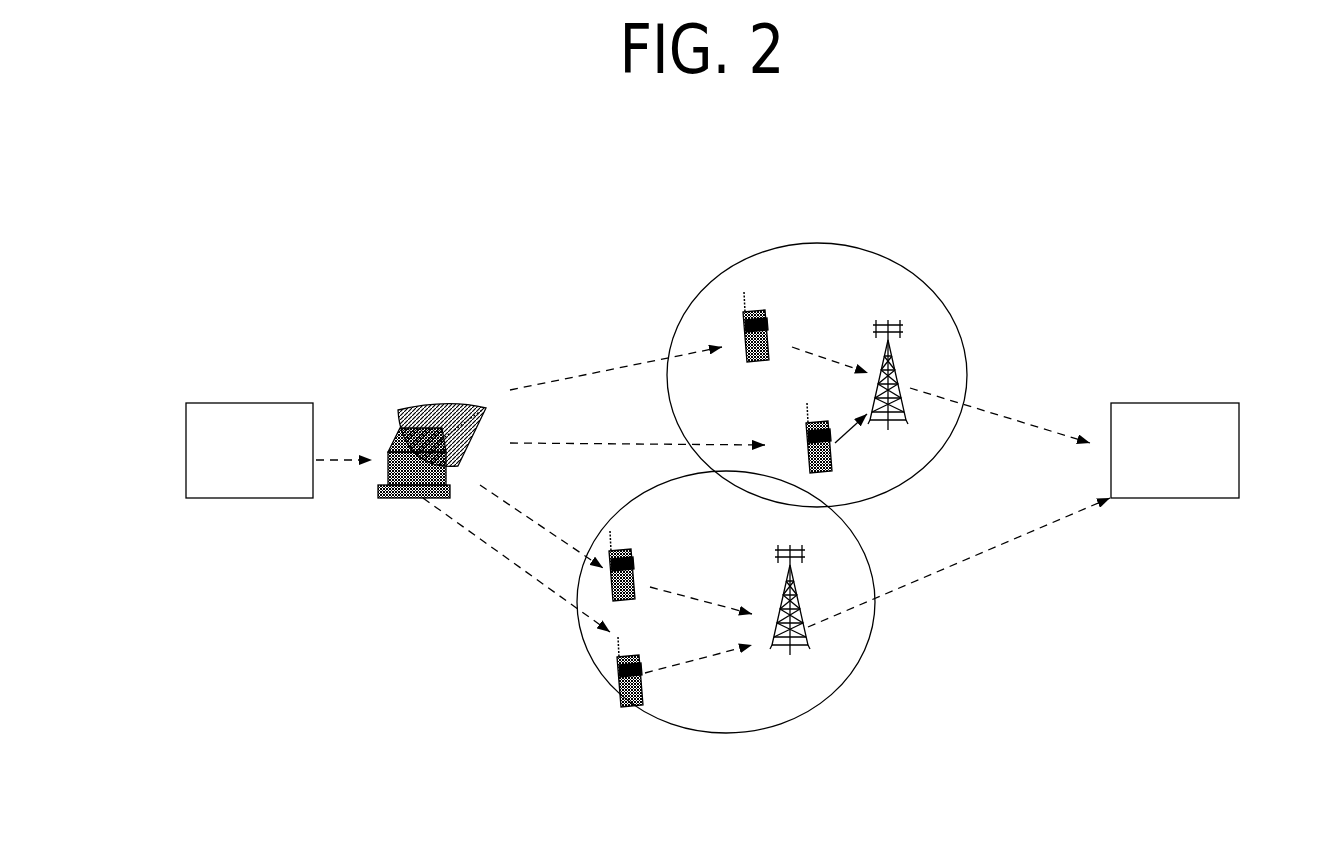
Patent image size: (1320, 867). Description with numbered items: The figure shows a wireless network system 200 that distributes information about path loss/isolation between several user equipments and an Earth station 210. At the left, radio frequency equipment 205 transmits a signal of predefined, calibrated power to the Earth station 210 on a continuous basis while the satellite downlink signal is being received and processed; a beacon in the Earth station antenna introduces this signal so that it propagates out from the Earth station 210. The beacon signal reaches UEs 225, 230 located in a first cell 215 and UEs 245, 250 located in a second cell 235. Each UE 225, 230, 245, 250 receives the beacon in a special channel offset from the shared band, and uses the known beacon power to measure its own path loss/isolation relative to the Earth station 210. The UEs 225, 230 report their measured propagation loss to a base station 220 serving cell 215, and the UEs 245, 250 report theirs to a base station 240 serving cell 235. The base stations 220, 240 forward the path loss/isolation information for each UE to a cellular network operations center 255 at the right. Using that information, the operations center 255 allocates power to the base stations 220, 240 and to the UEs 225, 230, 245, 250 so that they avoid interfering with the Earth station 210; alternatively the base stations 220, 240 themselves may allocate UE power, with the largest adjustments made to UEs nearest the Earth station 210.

The wireless network system 200 is at (320, 198).
The radio frequency equipment 205 is at (278, 397).
The Earth station 210 is at (397, 507).
The cell 215 is at (865, 652).
The base station 220 is at (773, 598).
The UE 225 is at (605, 522).
The UE 230 is at (612, 708).
The cell 235 is at (705, 283).
The base station 240 is at (927, 318).
The UE 245 is at (772, 290).
The UE 250 is at (850, 475).
The cellular NOC 255 is at (1145, 512).